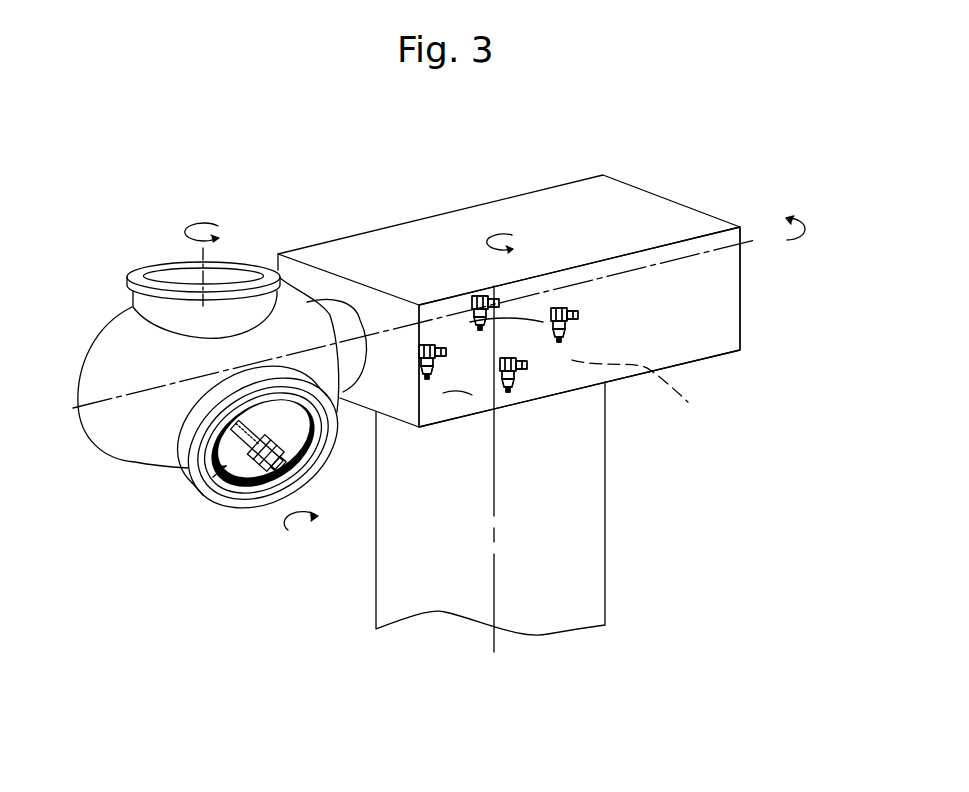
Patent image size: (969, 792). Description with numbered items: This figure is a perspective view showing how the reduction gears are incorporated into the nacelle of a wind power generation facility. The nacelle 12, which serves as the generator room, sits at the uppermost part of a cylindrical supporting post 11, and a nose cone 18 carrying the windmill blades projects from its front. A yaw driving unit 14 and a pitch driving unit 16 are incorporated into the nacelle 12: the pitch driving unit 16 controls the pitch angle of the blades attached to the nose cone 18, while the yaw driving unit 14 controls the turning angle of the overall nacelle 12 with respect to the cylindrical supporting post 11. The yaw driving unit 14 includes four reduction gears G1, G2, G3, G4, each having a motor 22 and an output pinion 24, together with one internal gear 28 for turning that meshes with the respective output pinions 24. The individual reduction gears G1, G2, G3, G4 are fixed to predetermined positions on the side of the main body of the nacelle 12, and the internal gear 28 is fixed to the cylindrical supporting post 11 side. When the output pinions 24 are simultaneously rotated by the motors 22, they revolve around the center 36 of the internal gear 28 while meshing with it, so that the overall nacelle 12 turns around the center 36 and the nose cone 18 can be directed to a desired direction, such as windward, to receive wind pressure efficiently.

The cylindrical supporting post 11 is at (580, 607).
The nacelle 12 is at (573, 188).
The yaw driving unit 14 is at (459, 406).
The pitch driving unit 16 is at (203, 497).
The nose cone 18 is at (137, 432).
The motor 22 is at (489, 297).
The output pinion 24 is at (481, 331).
The internal gear for turning 28 is at (641, 390).
The center of the internal gear 36 is at (494, 502).
The reduction gear G1 is at (557, 308).
The reduction gear G2 is at (530, 362).
The reduction gear G3 is at (420, 350).
The reduction gear G4 is at (475, 296).